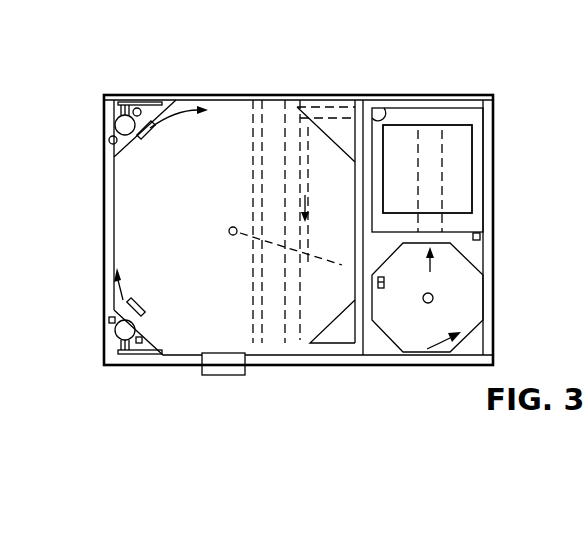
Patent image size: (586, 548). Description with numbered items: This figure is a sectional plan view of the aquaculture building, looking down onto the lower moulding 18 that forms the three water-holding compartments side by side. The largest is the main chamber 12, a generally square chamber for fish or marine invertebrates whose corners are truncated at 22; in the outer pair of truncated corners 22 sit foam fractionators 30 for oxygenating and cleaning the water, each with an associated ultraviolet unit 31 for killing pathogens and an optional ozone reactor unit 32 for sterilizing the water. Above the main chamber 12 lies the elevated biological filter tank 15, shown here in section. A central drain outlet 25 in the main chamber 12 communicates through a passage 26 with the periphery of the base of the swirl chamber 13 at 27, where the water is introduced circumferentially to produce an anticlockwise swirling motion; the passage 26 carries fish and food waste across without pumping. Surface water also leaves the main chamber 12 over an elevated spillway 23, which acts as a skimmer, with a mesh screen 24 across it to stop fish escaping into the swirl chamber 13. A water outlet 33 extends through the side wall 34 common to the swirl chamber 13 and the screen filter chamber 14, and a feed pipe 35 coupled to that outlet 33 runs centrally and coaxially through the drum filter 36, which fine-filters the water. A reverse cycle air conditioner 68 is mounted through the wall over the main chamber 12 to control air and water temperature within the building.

The main chamber 12 is at (123, 207).
The swirl chamber 13 is at (460, 332).
The screen filter chamber 14 is at (458, 122).
The biological filter tank 15 is at (332, 86).
The lower moulding 18 is at (405, 87).
The truncated corners 22 is at (118, 100).
The spillway 23 is at (380, 355).
The screen 24 is at (357, 353).
The central drain outlet 25 is at (228, 232).
The passage 26 is at (328, 262).
The passage inlet to swirl chamber 27 is at (383, 288).
The foam fractionator 30 is at (108, 127).
The ultraviolet unit 31 is at (139, 108).
The ozone reactor unit 32 is at (110, 143).
The water outlet 33 is at (447, 250).
The side wall 34 is at (455, 233).
The feed pipe 35 is at (440, 222).
The drum filter 36 is at (472, 156).
The reverse cycle air conditioner 68 is at (232, 374).